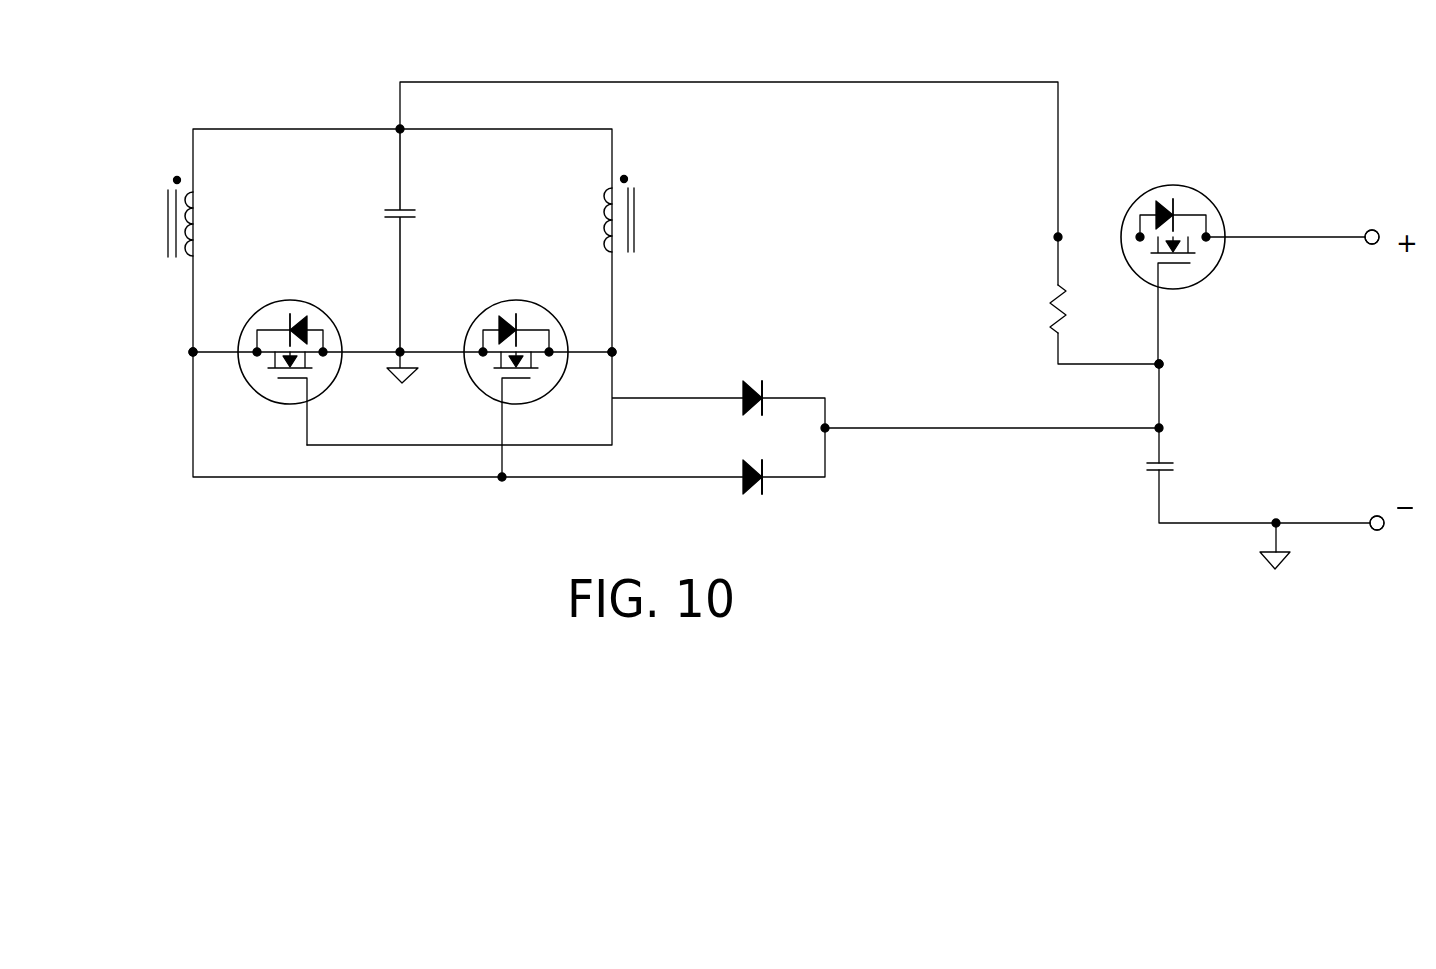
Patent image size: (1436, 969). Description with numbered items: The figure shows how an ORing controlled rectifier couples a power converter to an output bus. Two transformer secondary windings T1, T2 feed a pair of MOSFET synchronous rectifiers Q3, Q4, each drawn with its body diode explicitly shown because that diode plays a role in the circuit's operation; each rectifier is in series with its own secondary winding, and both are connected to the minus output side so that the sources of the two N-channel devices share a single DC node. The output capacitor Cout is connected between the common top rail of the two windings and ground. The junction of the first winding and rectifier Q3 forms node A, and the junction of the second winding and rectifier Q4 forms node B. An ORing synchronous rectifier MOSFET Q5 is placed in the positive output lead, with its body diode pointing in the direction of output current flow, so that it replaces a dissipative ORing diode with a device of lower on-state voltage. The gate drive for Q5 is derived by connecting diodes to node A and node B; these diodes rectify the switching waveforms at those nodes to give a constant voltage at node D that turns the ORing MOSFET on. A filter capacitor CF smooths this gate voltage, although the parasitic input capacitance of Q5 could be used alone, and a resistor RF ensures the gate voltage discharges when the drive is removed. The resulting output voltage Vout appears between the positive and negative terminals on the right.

The transformer secondary winding T1 is at (132, 220).
The transformer secondary winding T2 is at (667, 215).
The output capacitor Cout is at (439, 240).
The MOSFET synchronous rectifier Q3 is at (289, 355).
The MOSFET synchronous rectifier Q4 is at (516, 371).
The ORing synchronous rectifier MOSFET Q5 is at (1173, 256).
The resistor RF is at (1033, 312).
The filter capacitor CF is at (1184, 475).
The node A is at (173, 355).
The node B is at (631, 355).
The node D is at (1177, 366).
The output voltage Vout is at (1397, 380).